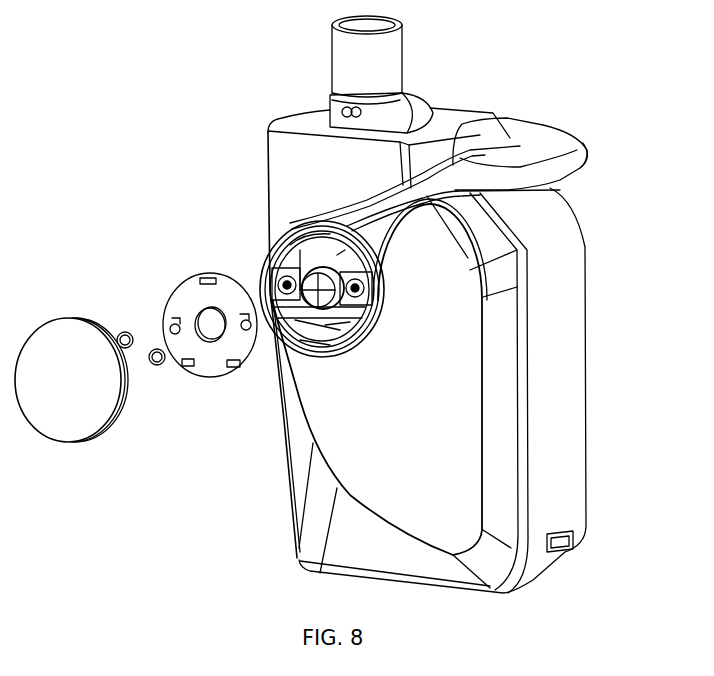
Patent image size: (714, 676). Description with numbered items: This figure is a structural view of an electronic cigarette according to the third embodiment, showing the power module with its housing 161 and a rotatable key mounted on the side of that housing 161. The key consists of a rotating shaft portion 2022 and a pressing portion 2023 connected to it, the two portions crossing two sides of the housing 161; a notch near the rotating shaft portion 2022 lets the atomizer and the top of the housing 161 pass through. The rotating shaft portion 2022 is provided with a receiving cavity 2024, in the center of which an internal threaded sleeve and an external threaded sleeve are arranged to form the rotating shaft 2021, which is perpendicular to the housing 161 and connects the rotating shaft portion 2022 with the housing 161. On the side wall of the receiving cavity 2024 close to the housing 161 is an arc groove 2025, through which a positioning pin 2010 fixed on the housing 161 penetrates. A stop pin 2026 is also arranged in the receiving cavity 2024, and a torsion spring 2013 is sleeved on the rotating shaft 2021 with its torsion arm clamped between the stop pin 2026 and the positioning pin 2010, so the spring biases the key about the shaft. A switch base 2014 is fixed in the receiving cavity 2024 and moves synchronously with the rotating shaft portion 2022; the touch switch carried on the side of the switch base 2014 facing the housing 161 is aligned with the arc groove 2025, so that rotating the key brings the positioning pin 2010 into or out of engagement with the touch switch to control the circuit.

The housing 161 is at (565, 443).
The positioning pin 2010 is at (340, 252).
The torsion spring 2013 is at (373, 280).
The switch base 2014 is at (197, 275).
The rotating shaft 2021 is at (313, 315).
The rotating shaft portion 2022 is at (268, 228).
The pressing portion 2023 is at (367, 198).
The receiving cavity 2024 is at (263, 253).
The arc groove 2025 is at (287, 220).
The stop pin 2026 is at (272, 322).